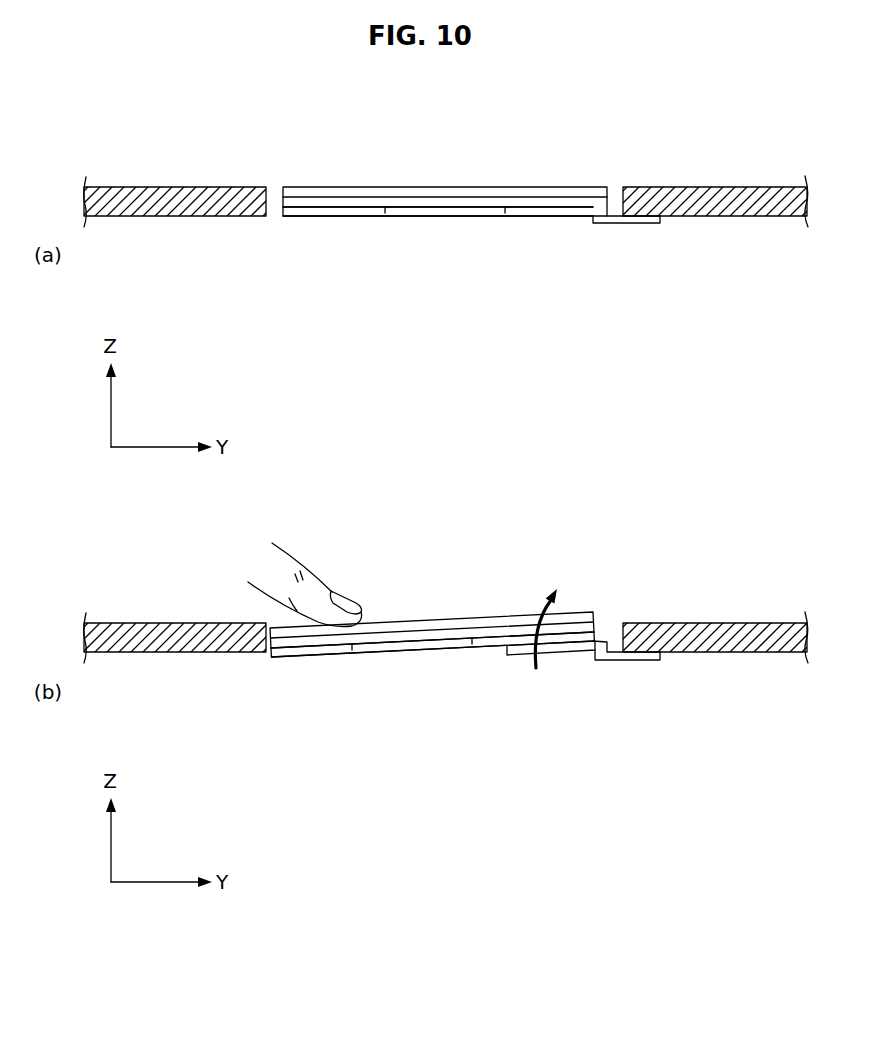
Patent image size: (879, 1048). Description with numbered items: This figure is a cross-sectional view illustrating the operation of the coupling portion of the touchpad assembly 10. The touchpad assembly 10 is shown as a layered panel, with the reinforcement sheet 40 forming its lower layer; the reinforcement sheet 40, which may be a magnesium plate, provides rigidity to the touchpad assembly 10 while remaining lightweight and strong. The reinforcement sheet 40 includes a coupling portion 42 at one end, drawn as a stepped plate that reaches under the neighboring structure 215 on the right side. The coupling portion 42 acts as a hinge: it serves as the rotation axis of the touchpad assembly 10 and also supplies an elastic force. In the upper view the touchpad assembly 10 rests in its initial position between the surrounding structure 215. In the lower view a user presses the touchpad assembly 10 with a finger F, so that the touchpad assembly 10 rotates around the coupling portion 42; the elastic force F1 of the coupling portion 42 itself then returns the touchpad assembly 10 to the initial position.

The housing / cover member 215 is at (160, 187).
The touchpad assembly 10 is at (385, 187).
The reinforcement sheet 40 is at (335, 217).
The coupling portion 42 is at (633, 224).
The finger F is at (323, 585).
The elastic force F1 is at (540, 642).